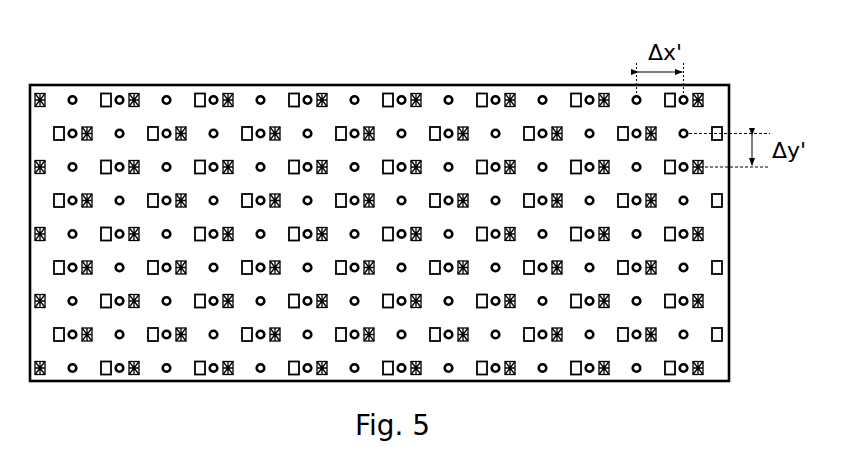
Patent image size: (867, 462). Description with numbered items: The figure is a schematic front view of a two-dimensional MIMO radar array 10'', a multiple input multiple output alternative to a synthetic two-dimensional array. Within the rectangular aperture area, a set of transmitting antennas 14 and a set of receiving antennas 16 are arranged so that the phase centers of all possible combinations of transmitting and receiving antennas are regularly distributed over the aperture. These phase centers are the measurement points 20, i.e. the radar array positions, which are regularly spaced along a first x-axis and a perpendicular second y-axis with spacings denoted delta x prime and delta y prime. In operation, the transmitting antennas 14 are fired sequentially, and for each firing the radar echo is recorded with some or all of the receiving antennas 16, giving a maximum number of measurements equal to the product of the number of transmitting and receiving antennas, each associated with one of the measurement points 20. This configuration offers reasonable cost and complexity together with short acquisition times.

The 2D MIMO radar array 10'' is at (424, 233).
The transmitting antenna 14 is at (41, 92).
The receiving antenna 16 is at (106, 92).
The measurement point 20 is at (542, 95).